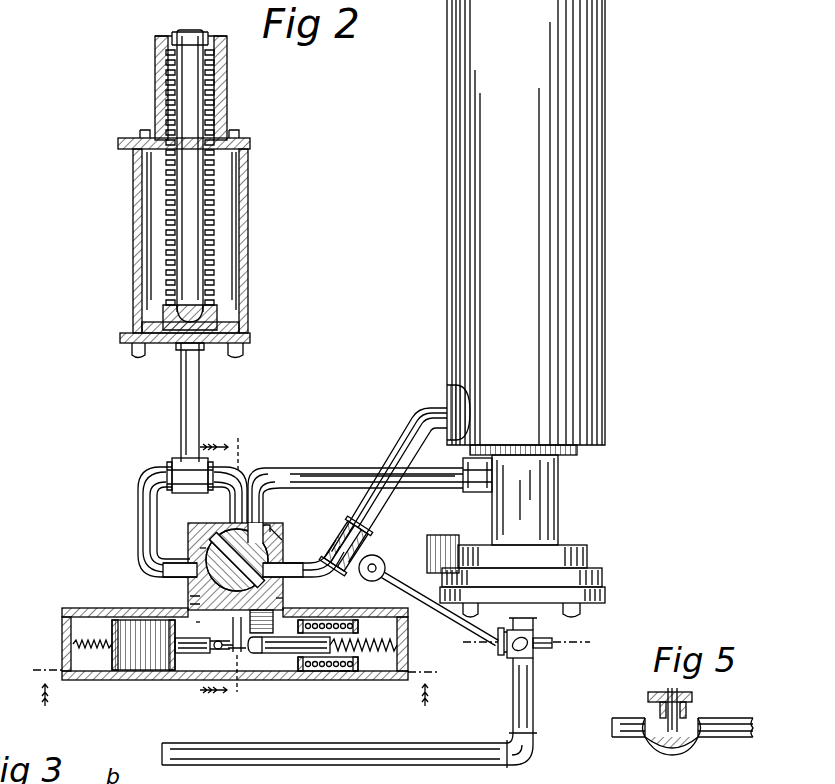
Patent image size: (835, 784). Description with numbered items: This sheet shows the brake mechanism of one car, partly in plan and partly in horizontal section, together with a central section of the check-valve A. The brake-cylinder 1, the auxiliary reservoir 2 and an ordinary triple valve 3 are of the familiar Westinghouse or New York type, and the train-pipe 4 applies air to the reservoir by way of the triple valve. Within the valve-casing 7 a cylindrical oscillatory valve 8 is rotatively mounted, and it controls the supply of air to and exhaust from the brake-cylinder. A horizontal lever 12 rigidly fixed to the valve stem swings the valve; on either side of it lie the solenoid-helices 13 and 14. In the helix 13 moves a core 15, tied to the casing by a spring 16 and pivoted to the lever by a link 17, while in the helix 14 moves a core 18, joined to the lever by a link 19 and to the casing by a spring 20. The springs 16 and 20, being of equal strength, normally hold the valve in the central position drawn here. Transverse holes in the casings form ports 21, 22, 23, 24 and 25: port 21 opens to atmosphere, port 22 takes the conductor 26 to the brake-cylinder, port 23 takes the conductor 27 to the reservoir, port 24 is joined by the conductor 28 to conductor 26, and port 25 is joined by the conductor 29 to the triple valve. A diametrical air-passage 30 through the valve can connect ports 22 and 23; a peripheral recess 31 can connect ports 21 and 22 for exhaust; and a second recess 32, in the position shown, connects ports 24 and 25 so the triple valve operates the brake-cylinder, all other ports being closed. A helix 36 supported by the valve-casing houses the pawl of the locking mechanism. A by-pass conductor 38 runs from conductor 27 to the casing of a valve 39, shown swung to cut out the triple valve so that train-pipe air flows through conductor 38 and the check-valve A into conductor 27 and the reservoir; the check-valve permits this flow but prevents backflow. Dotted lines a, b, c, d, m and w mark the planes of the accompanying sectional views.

In FIG. 2, the brake-cylinder 1 is at (133, 231).
In FIG. 2, the auxiliary reservoir 2 is at (447, 240).
In FIG. 2, the triple valve 3 is at (560, 494).
In FIG. 2, the train-pipe 4 is at (520, 708).
In FIG. 2, the valve-casing 7 is at (264, 528).
In FIG. 2, the cylindrical oscillatory valve 8 is at (279, 532).
In FIG. 2, the horizontal lever 12 is at (234, 626).
In FIG. 2, the solenoid-helix 13 is at (142, 672).
In FIG. 2, the solenoid-helix 14 is at (345, 672).
In FIG. 2, the core 15 is at (192, 656).
In FIG. 2, the spring 16 is at (92, 657).
In FIG. 2, the link 17 is at (226, 658).
In FIG. 2, the core 18 is at (296, 656).
In FIG. 2, the link 19 is at (254, 656).
In FIG. 2, the spring 20 is at (363, 634).
In FIG. 2, the port 21 is at (190, 600).
In FIG. 2, the port 22 is at (197, 548).
In FIG. 2, the port 23 is at (283, 596).
In FIG. 2, the port 24 is at (213, 525).
In FIG. 2, the port 25 is at (302, 532).
In FIG. 2, the conductor 26 is at (181, 402).
In FIG. 2, the conductor 27 is at (371, 502).
In FIG. 2, the conductor 28 is at (253, 470).
In FIG. 2, the conductor 29 is at (340, 468).
In FIG. 2, the air-passage 30 is at (282, 458).
In FIG. 2, the recess 31 is at (188, 628).
In FIG. 2, the recess 32 is at (325, 556).
In FIG. 2, the helix 36 is at (304, 640).
In FIG. 2, the conductor 38 is at (395, 583).
In FIG. 2, the valve 39 is at (535, 652).
In FIG. 2, the check-valve A is at (382, 550).
In FIG. 5, the check-valve A is at (694, 716).
In FIG. 2, the section line ab a is at (36, 679).
In FIG. 2, the section line ab b is at (78, 600).
In FIG. 2, the section line cd c is at (473, 642).
In FIG. 2, the section line cd d is at (581, 642).
In FIG. 2, the section line mn m is at (223, 441).
In FIG. 2, the direction w is at (224, 686).